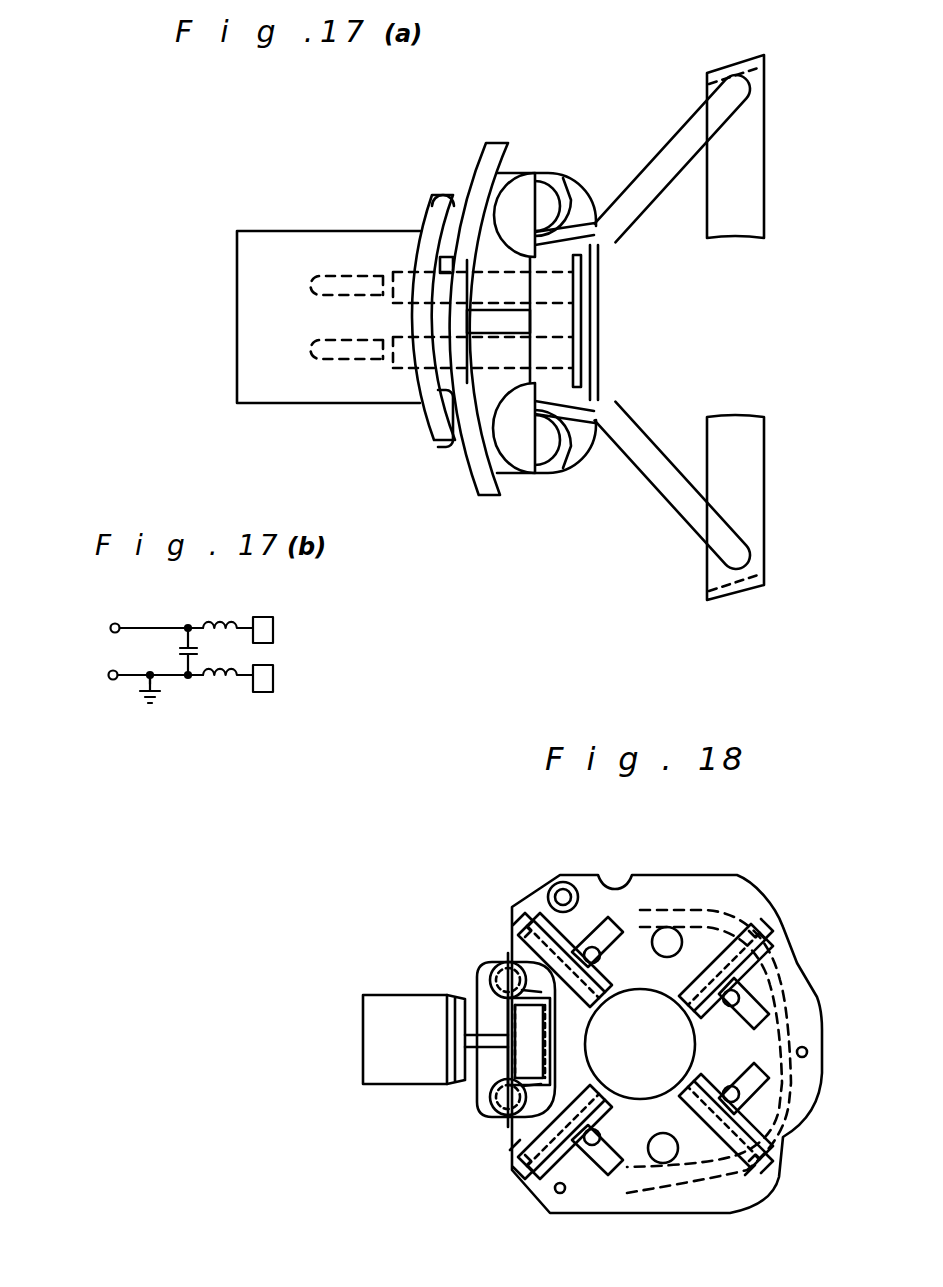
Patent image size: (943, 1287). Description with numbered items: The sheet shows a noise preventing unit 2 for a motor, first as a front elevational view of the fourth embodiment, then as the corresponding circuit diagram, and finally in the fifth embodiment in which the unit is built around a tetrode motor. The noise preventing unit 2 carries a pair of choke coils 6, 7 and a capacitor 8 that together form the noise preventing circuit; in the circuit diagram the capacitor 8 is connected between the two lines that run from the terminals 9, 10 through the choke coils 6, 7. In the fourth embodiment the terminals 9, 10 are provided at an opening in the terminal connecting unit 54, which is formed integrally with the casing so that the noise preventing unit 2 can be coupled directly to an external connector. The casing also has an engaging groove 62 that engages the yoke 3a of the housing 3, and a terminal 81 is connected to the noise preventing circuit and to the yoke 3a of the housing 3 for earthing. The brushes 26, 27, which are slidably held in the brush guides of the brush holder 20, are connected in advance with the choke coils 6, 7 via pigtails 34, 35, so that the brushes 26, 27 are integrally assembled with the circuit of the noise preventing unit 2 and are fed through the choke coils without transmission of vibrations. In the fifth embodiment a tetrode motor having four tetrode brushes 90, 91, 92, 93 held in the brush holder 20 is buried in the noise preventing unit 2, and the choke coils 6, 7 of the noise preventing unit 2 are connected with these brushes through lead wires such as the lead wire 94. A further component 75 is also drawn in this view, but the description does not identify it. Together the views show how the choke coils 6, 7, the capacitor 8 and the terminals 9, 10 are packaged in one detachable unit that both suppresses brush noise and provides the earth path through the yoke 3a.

In FIG. 17A, the terminal connecting unit 54 is at (292, 250).
In FIG. 17A, the terminal 9 is at (442, 280).
In FIG. 17B, the terminal 9 is at (110, 628).
In FIG. 17A, the terminal 10 is at (348, 352).
In FIG. 17B, the terminal 10 is at (108, 675).
In FIG. 17A, the housing 3 is at (498, 158).
In FIG. 17A, the yoke 3a is at (477, 183).
In FIG. 17B, the yoke 3a is at (163, 693).
In FIG. 17A, the terminal 81 is at (433, 212).
In FIG. 17B, the terminal 81 is at (150, 677).
In FIG. 17A, the engaging groove 62 is at (443, 388).
In FIG. 17A, the choke coil 6 is at (556, 192).
In FIG. 17B, the choke coil 6 is at (227, 628).
In FIG. 18, the choke coil 6 is at (507, 963).
In FIG. 17A, the choke coil 7 is at (553, 463).
In FIG. 17B, the choke coil 7 is at (227, 682).
In FIG. 17A, the capacitor 8 is at (578, 326).
In FIG. 17B, the capacitor 8 is at (207, 652).
In FIG. 18, the capacitor 8 is at (530, 1050).
In FIG. 17A, the pigtail 35 is at (665, 166).
In FIG. 17A, the pigtail 34 is at (647, 450).
In FIG. 17A, the brush 27 is at (753, 168).
In FIG. 17A, the brush 26 is at (748, 490).
In FIG. 18, the brush holder 20 is at (717, 897).
In FIG. 18, the tetrode brush 92 is at (773, 930).
In FIG. 18, the lead wire 94 is at (513, 930).
In FIG. 18, the tetrode brush 90 is at (538, 910).
In FIG. 18, the noise preventing unit 2 is at (403, 990).
In FIG. 18, the connector housing 75 is at (490, 1110).
In FIG. 18, the tetrode brush 91 is at (510, 1153).
In FIG. 18, the tetrode brush 93 is at (743, 1170).